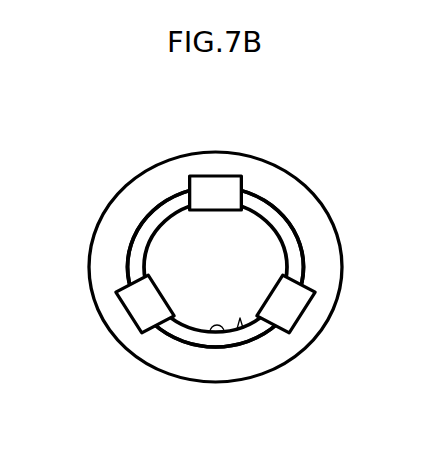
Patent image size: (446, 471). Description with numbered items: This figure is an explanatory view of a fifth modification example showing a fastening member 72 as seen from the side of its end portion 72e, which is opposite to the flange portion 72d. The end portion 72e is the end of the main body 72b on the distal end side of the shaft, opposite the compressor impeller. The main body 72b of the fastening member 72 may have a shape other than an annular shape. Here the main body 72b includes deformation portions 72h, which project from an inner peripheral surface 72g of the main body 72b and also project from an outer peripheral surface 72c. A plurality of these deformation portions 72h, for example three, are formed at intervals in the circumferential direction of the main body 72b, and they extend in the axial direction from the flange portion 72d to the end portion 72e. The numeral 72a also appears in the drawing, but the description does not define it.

The fastening member 72 is at (146, 145).
The protrusion 72a is at (240, 318).
The main body 72b is at (298, 235).
The outer peripheral surface 72c is at (303, 263).
The flange portion 72d is at (195, 358).
The end portion 72e is at (177, 332).
The inner peripheral surface 72g is at (218, 325).
The deformation portion 72h is at (242, 187).